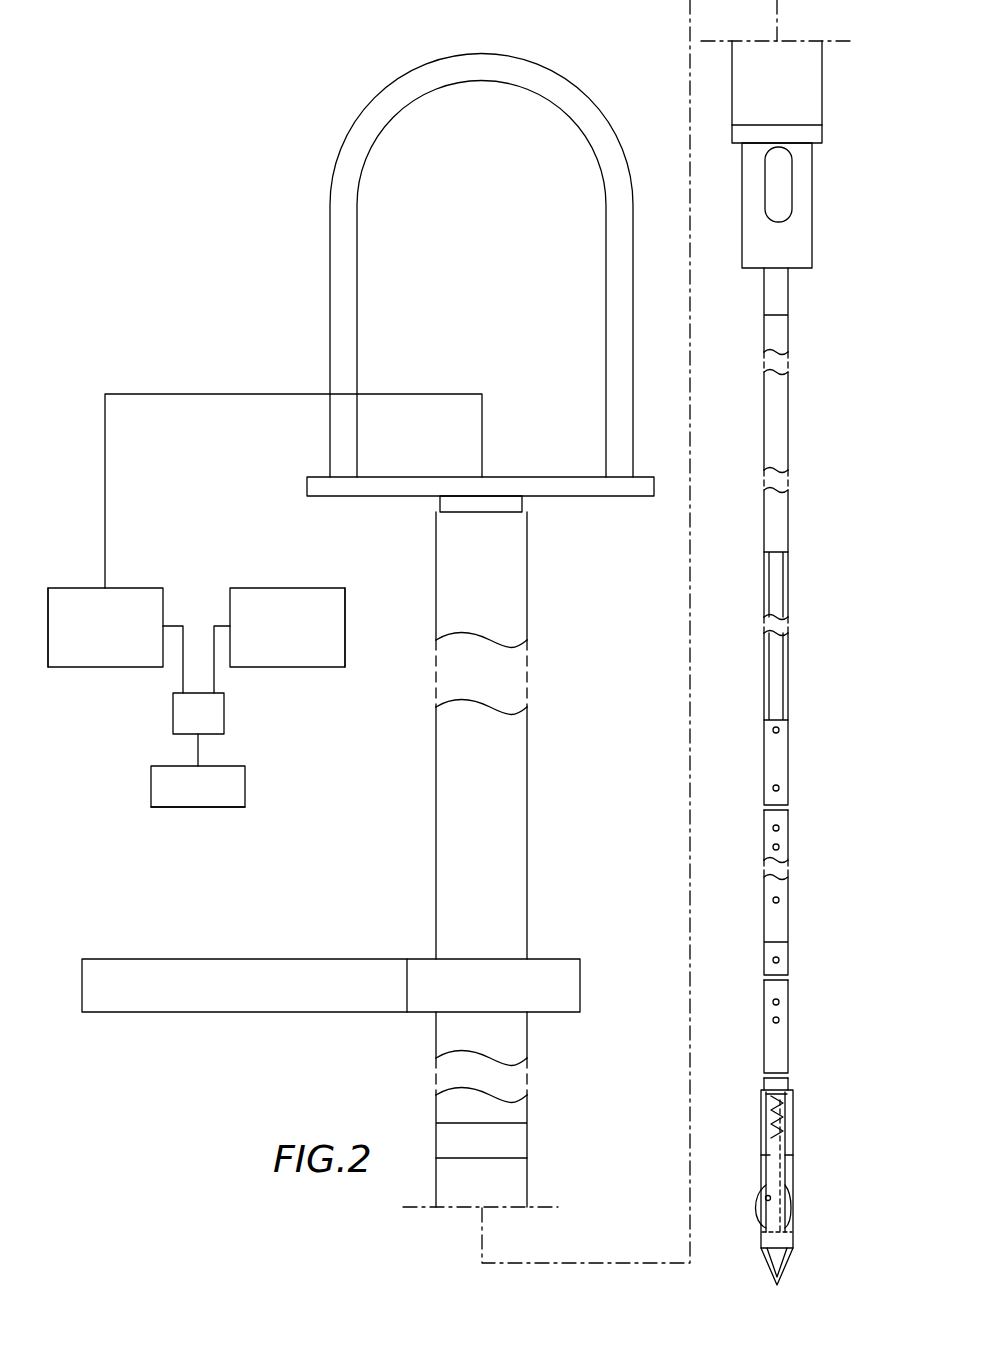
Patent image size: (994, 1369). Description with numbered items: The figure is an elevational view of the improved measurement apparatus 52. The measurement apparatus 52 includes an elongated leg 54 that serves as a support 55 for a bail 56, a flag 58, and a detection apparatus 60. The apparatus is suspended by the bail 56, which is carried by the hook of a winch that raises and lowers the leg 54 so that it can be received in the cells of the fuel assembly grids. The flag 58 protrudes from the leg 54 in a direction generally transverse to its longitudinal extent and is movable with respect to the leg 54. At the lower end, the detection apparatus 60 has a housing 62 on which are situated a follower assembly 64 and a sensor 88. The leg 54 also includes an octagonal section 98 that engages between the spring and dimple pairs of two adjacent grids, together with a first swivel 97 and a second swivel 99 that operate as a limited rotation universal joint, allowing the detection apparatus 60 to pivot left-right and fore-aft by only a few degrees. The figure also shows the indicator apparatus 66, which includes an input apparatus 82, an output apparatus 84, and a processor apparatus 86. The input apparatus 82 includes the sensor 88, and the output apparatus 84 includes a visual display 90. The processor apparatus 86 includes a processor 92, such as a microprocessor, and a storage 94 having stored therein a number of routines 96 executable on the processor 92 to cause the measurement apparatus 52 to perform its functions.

The measurement apparatus 52 is at (238, 1040).
The elongated leg 54 is at (527, 1172).
The support 55 is at (527, 1190).
The bail 56 is at (500, 55).
The flag 58 is at (152, 1012).
The detection apparatus 60 is at (795, 1122).
The housing 62 is at (793, 1234).
The follower assembly 64 is at (757, 1205).
The indicator apparatus 66 is at (180, 575).
The input apparatus 82 is at (88, 588).
The output apparatus 84 is at (283, 588).
The processor apparatus 86 is at (238, 745).
The sensor 88 is at (48, 610).
The visual display 90 is at (338, 612).
The processor 92 is at (173, 707).
The storage 94 is at (151, 778).
The routines 96 is at (234, 797).
The first swivel 97 is at (790, 1006).
The octagonal section 98 is at (788, 668).
The second swivel 99 is at (790, 768).